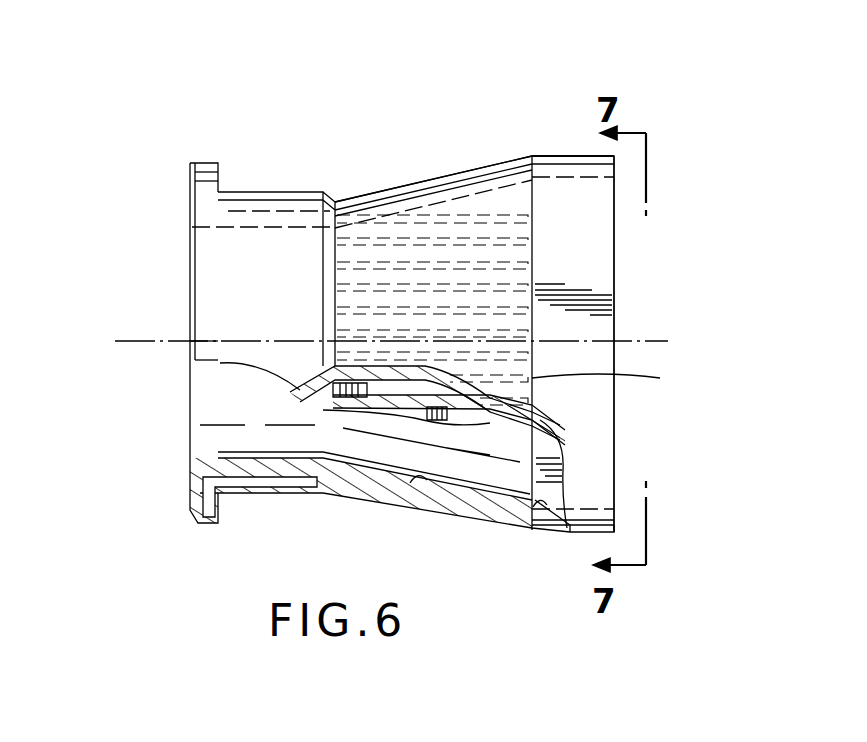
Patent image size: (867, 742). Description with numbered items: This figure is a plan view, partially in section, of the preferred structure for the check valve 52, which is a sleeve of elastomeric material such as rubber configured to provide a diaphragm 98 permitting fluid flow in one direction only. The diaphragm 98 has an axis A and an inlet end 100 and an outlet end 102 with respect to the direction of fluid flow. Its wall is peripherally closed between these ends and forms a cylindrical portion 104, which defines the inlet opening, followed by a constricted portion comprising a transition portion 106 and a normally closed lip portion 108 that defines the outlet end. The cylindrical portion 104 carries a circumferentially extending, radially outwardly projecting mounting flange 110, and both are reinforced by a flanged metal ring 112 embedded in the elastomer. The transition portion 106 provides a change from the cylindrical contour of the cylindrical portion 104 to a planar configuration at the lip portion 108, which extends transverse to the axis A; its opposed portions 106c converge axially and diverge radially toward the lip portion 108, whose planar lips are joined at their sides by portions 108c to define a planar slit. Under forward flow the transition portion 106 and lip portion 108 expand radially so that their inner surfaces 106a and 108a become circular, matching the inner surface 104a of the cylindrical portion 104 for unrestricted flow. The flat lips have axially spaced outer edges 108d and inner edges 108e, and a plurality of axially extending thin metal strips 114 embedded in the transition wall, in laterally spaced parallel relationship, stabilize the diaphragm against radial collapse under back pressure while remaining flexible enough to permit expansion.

The check valve 52 is at (432, 92).
The diaphragm 98 is at (404, 126).
The axis A is at (172, 343).
The inlet end 100 is at (188, 346).
The outlet end 102 is at (618, 252).
The cylindrical portion 104 is at (266, 188).
The inner surface of cylindrical portion 104a is at (215, 462).
The transition portion 106 is at (490, 160).
The inner surface of transition portion 106a is at (415, 500).
The opposed portions of transition portion 106c is at (522, 157).
The lip portion 108 is at (560, 153).
The inner surface of lip portion 108a is at (540, 515).
The side portions 108c is at (582, 155).
The outer edges 108d is at (612, 303).
The inner edges 108e is at (622, 382).
The mounting flange 110 is at (208, 163).
The flanged metal ring 112 is at (265, 490).
The thin metal strips 114 is at (440, 212).